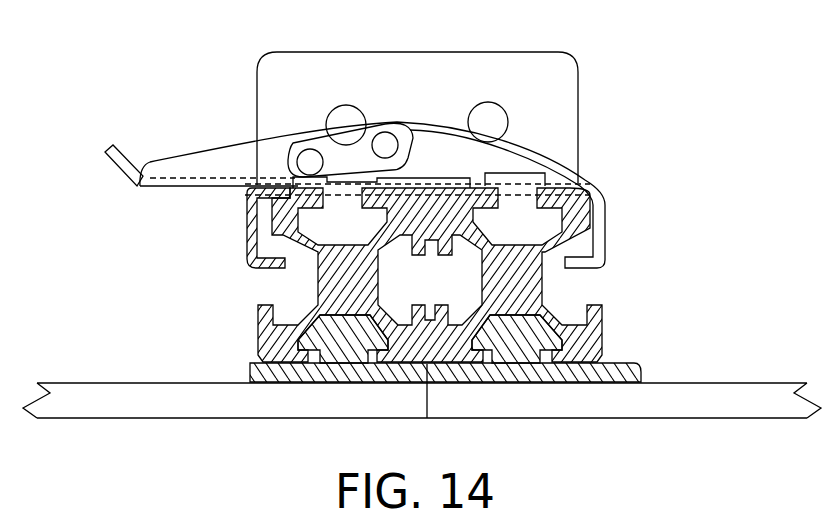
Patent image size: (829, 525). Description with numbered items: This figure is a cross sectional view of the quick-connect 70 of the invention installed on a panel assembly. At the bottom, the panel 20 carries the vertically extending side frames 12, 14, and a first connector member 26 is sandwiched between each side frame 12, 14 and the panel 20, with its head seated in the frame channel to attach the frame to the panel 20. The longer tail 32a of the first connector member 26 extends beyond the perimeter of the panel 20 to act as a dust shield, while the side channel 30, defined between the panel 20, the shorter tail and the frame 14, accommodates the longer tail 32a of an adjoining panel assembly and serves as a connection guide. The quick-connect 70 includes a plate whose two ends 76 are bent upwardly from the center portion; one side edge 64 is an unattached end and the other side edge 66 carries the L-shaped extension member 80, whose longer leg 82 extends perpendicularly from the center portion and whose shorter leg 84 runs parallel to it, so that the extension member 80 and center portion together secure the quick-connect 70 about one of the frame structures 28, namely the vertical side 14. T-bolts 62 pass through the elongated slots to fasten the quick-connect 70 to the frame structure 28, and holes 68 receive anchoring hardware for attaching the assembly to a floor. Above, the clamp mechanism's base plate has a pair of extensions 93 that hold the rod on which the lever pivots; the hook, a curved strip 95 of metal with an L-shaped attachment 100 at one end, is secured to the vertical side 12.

The vertically extending side frame 12 is at (597, 350).
The vertically extending side frame 14 is at (262, 362).
The panel 20 is at (147, 402).
The first connector member 26 is at (347, 373).
The frame structure 28 is at (262, 330).
The side channel 30 is at (472, 372).
The longer tail 32a is at (400, 373).
The t-bolt 62 is at (343, 214).
The side edge 64 is at (578, 190).
The side edge 66 is at (247, 197).
The holes 68 is at (348, 115).
The quick-connect 70 is at (603, 232).
The ends 76 is at (544, 66).
The L-shaped extension member 80 is at (245, 242).
The longer leg 82 is at (245, 222).
The shorter leg 84 is at (267, 270).
The extensions 93 is at (425, 150).
The curved strip 95 is at (585, 172).
The L-shaped attachment 100 is at (583, 266).